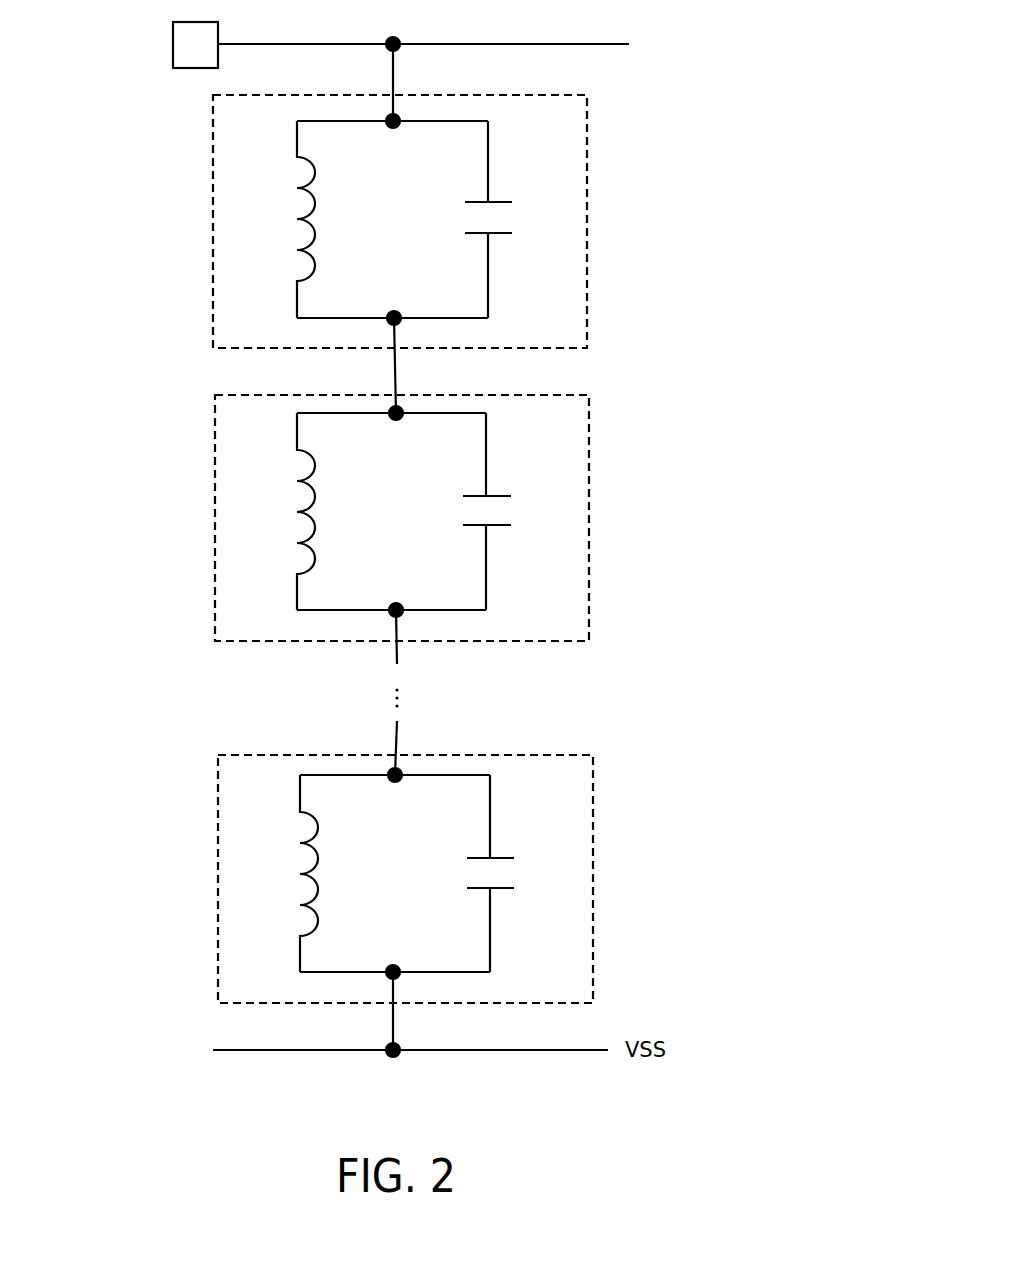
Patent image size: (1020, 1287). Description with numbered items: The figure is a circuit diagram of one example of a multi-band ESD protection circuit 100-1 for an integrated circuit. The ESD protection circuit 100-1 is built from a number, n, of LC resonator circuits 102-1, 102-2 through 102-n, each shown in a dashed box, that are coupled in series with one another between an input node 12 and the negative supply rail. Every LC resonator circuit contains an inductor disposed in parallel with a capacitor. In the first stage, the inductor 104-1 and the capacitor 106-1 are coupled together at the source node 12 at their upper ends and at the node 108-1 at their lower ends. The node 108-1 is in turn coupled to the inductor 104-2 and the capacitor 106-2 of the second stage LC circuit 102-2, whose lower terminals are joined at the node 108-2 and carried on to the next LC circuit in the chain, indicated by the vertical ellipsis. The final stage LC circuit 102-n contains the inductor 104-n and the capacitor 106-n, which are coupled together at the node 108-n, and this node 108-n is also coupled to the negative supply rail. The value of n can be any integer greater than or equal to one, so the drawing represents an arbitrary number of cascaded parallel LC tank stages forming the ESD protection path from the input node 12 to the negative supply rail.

The input node 12 is at (173, 36).
The ESD protection circuit 100-1 is at (663, 106).
The LC resonator circuit 102-1 is at (587, 158).
The LC resonator circuit 102-2 is at (589, 457).
The LC resonator circuit 102-n is at (593, 818).
The inductor 104-1 is at (298, 188).
The inductor 104-2 is at (298, 482).
The inductor 104-n is at (301, 844).
The capacitor 106-1 is at (512, 233).
The capacitor 106-2 is at (511, 525).
The capacitor 106-n is at (514, 888).
The node 108-1 is at (394, 316).
The node 108-2 is at (397, 608).
The node 108-n is at (394, 970).